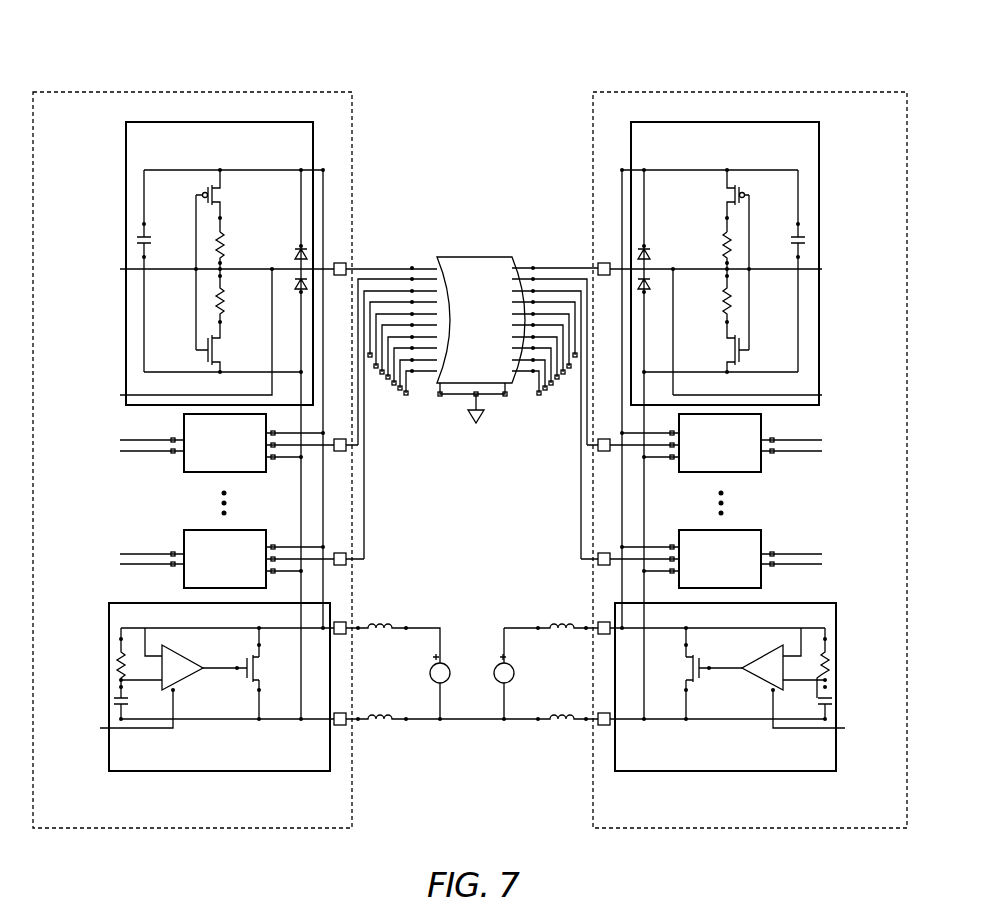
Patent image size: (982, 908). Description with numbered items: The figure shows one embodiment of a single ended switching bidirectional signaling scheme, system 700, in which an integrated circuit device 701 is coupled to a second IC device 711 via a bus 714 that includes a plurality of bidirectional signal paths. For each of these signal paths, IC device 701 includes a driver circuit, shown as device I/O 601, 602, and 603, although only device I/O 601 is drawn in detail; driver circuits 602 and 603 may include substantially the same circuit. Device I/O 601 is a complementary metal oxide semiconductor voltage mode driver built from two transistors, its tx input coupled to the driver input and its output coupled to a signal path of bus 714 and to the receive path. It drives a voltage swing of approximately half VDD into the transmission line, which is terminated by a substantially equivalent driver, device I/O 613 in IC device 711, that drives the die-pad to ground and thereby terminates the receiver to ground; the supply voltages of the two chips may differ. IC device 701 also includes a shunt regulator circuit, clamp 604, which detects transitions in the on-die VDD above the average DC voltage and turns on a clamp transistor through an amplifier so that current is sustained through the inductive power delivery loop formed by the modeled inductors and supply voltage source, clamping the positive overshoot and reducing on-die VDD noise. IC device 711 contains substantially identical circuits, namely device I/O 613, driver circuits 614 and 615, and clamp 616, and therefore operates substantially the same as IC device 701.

The system 700 is at (470, 422).
The integrated circuit (IC) device 701 is at (235, 460).
The IC device 711 is at (744, 460).
The device I/O 601 is at (263, 420).
The device I/O 613 is at (736, 420).
The device I/O (driver circuit) 602 is at (203, 473).
The device I/O (driver circuit) 603 is at (203, 530).
The device I/O (driver circuit) 614 is at (743, 473).
The device I/O (driver circuit) 615 is at (743, 530).
The clamp (shunt regulator circuit) 604 is at (189, 687).
The clamp (shunt regulator circuit) 616 is at (755, 687).
The bus 714 is at (478, 408).